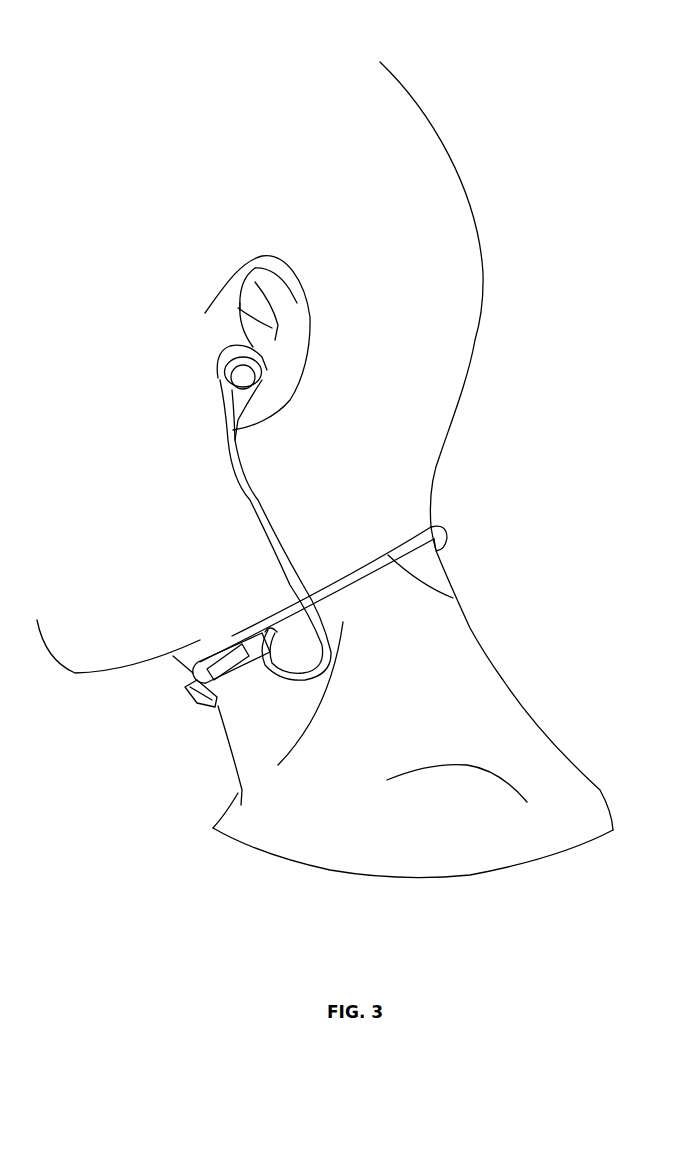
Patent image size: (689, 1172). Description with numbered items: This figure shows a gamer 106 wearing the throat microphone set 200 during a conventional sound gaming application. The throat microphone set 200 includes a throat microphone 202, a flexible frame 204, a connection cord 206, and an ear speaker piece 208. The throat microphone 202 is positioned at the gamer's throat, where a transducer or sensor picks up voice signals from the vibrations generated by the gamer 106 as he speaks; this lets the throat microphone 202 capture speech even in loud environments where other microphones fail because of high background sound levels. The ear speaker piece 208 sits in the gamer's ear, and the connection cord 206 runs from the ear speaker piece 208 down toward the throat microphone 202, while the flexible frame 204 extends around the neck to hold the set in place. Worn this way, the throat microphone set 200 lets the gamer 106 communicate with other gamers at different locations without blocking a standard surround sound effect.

The gamer 106 is at (193, 170).
The throat microphone set 200 is at (305, 590).
The throat microphone 202 is at (184, 630).
The flexible frame 204 is at (453, 598).
The connection cord 206 is at (265, 525).
The ear speaker piece 208 is at (253, 367).